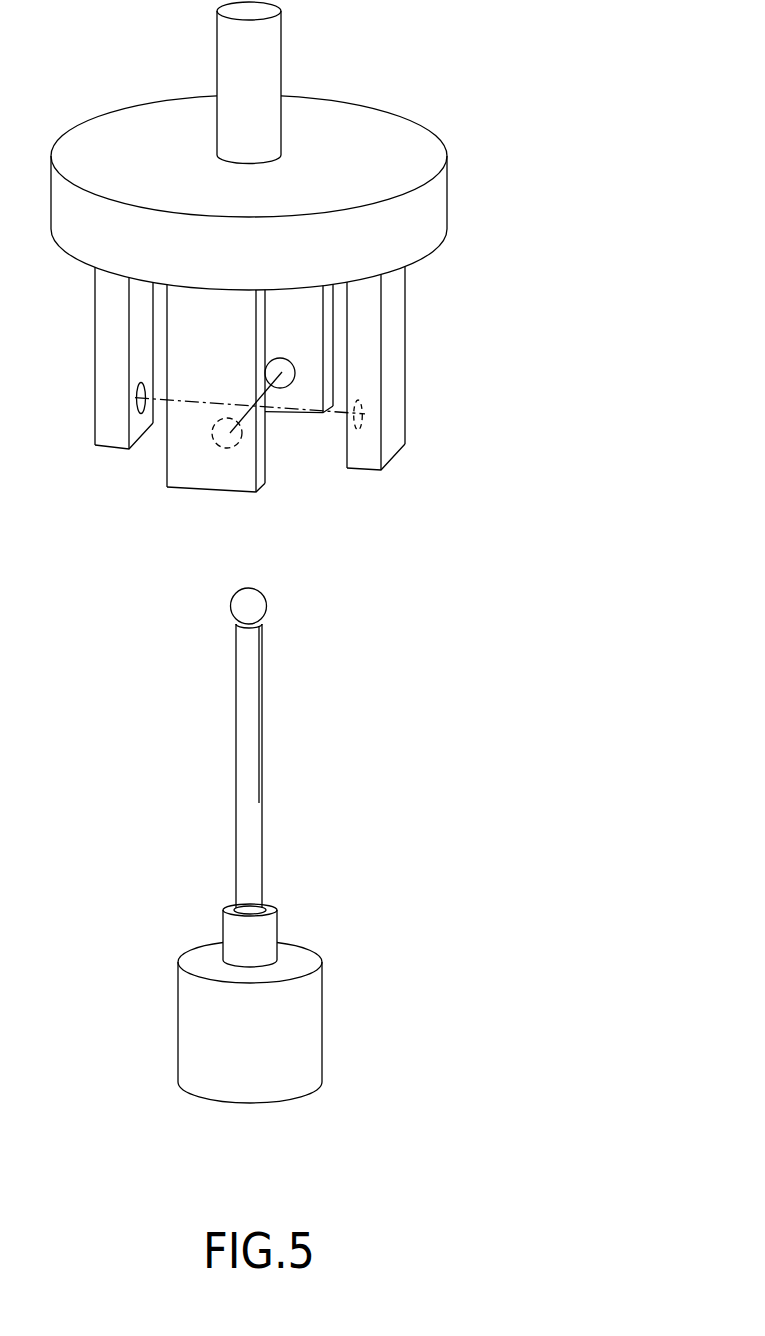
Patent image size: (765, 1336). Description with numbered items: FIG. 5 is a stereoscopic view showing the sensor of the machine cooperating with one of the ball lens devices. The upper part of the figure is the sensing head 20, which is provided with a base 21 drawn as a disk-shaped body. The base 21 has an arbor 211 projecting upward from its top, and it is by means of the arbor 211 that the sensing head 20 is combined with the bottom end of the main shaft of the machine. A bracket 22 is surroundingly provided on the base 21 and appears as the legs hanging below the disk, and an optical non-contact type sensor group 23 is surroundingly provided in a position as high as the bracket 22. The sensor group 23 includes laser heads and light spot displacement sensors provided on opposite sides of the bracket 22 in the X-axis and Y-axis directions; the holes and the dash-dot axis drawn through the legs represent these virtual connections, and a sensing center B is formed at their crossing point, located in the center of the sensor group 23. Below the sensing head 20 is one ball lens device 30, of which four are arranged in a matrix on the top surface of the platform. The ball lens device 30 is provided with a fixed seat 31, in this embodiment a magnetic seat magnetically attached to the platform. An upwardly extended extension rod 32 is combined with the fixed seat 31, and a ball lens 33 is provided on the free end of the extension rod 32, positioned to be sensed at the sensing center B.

The sensing head 20 is at (308, 296).
The base 21 is at (435, 203).
The arbor 211 is at (267, 52).
The bracket 22 is at (397, 345).
The optical non-contact type sensor group 23 is at (195, 512).
The sensing center B is at (252, 403).
The ball lens device 30 is at (326, 836).
The fixed seat 31 is at (302, 1033).
The extension rod 32 is at (250, 710).
The ball lens 33 is at (260, 601).